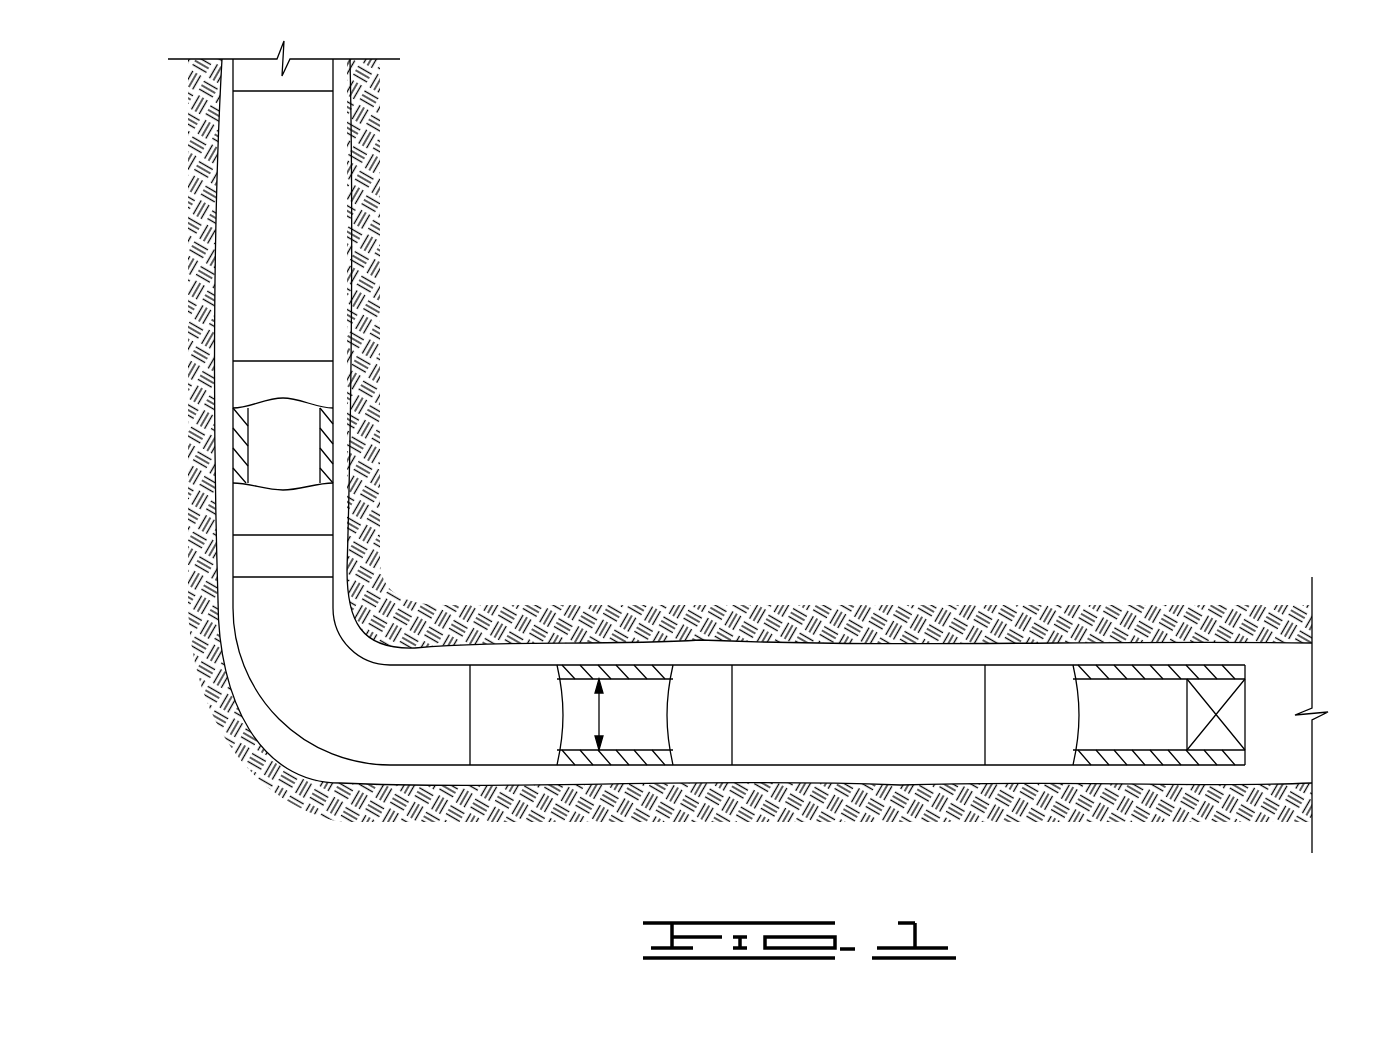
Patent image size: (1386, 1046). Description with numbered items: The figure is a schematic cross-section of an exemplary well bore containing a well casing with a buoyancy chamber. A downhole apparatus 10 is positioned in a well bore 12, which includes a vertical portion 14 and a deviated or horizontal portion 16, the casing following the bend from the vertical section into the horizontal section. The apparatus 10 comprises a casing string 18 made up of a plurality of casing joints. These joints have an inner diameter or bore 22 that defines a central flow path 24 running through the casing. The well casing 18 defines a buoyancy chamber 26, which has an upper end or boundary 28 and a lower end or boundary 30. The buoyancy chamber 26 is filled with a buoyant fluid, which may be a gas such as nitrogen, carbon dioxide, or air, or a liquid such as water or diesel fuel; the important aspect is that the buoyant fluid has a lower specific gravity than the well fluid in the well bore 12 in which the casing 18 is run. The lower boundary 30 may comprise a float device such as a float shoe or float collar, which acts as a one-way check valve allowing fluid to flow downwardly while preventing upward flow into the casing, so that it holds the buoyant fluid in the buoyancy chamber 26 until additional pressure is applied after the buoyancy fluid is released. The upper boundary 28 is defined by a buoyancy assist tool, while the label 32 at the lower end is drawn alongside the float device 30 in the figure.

The downhole apparatus 10 is at (763, 328).
The well bore 12 is at (383, 170).
The vertical portion 14 is at (763, 422).
The horizontal portion 16 is at (985, 640).
The casing string 18 is at (233, 512).
The bore 22 is at (597, 715).
The central flow path 24 is at (640, 700).
The buoyancy chamber 26 is at (1145, 720).
The upper boundary 28 is at (313, 558).
The lower boundary 30 is at (1218, 693).
The actuator 32 is at (1216, 714).